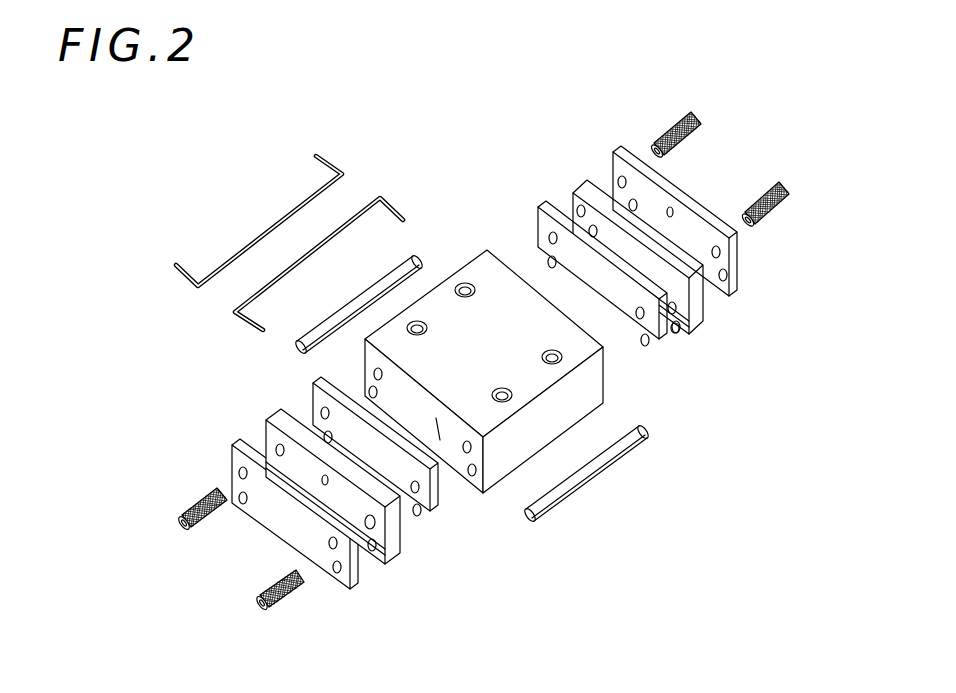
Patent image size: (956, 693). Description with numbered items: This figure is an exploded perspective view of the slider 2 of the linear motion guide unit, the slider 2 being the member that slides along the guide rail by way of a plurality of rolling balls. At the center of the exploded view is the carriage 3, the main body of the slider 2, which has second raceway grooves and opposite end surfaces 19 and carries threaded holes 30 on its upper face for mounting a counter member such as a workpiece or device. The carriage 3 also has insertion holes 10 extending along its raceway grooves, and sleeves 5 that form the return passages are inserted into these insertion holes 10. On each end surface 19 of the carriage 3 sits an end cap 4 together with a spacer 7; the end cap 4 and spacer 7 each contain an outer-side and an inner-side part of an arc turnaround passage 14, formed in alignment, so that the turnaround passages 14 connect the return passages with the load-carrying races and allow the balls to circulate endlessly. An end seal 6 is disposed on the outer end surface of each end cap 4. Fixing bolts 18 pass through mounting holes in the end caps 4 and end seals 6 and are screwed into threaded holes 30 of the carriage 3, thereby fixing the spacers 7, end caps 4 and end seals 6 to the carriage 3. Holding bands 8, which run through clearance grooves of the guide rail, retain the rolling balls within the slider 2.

The slider 2 is at (473, 237).
The carriage 3 is at (468, 405).
The end cap 4 is at (573, 196).
The sleeve 5 is at (402, 258).
The end seal 6 is at (727, 262).
The spacer 7 is at (623, 303).
The holding band 8 is at (302, 257).
The insertion hole 10 is at (376, 378).
The turnaround passage 14 is at (673, 330).
The fixing bolt 18 is at (667, 128).
The end surface 19 is at (525, 277).
The threaded hole 30 is at (386, 378).